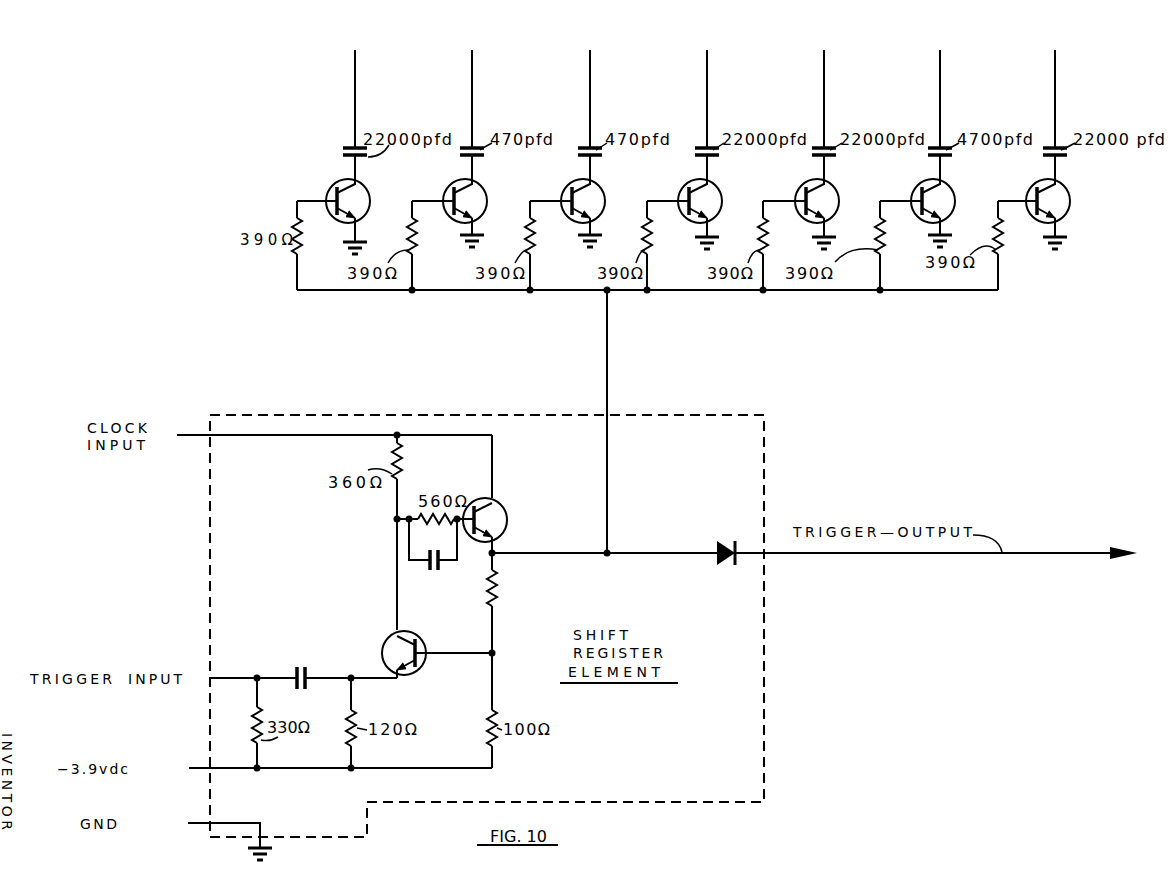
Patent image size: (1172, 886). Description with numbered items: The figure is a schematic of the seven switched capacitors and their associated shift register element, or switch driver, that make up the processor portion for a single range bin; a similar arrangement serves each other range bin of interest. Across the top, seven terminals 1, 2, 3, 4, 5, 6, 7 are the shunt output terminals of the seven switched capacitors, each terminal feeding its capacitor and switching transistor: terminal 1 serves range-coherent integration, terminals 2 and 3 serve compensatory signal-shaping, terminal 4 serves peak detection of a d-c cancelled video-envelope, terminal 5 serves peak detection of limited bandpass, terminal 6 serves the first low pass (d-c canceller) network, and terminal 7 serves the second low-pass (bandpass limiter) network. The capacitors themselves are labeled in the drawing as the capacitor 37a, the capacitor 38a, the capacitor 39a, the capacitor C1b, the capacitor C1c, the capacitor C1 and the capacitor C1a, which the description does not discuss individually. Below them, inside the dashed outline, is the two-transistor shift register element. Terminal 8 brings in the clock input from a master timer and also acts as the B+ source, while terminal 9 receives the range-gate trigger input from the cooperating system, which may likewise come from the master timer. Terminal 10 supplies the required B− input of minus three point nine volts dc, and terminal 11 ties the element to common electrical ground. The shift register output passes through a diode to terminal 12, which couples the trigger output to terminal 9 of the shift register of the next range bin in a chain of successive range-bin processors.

The terminal 1 is at (355, 87).
The terminal 2 is at (472, 87).
The terminal 3 is at (590, 87).
The terminal 4 is at (707, 87).
The terminal 5 is at (824, 87).
The terminal 6 is at (940, 87).
The terminal 7 is at (1055, 87).
The clock input terminal 8 is at (322, 435).
The range-gate trigger input terminal 9 is at (291, 678).
The B− input terminal 10 is at (328, 768).
The common ground terminal 11 is at (218, 835).
The output terminal 12 is at (814, 562).
The capacitor 22000 pfd 37a is at (348, 148).
The capacitor 470 pfd 38a is at (485, 157).
The capacitor 470 pfd 39a is at (602, 157).
The capacitor 22000 pfd C1b is at (718, 157).
The capacitor 22000 pfd C1c is at (832, 157).
The capacitor 4700 pfd C1 is at (947, 157).
The capacitor 22000 pfd C1a is at (1061, 157).